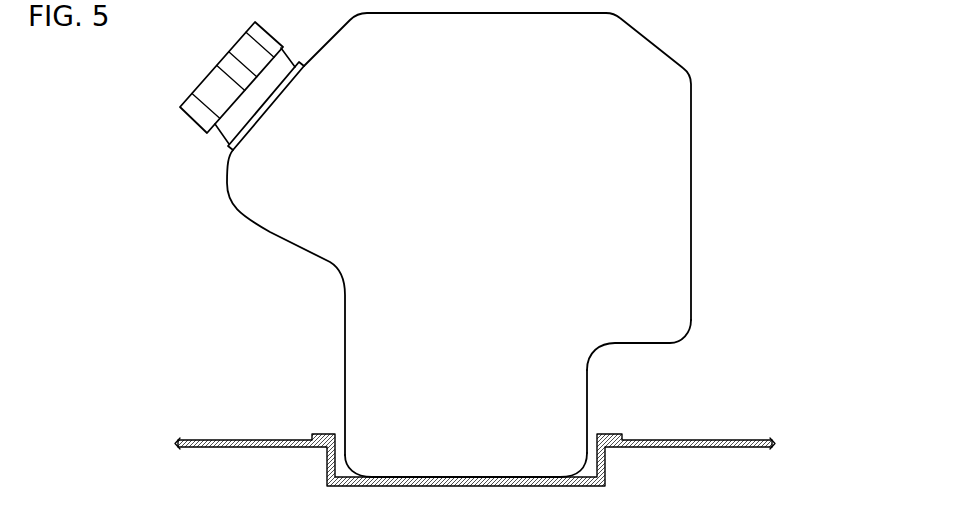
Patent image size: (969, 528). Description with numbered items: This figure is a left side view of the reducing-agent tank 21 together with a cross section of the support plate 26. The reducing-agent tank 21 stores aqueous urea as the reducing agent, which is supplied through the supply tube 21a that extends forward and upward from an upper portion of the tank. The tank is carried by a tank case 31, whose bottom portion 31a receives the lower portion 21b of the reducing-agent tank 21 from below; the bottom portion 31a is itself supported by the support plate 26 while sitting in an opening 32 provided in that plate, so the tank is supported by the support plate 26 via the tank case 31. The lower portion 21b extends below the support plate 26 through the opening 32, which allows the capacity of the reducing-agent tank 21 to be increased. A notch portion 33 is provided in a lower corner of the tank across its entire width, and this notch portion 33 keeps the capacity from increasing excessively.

The reducing-agent tank 21 is at (692, 137).
The supply tube 21a is at (228, 126).
The lower portion 21b is at (395, 453).
The support plate 26 is at (236, 440).
The tank case 31 is at (475, 460).
The bottom portion 31a is at (606, 465).
The opening 32 is at (337, 441).
The notch portion 33 is at (638, 344).